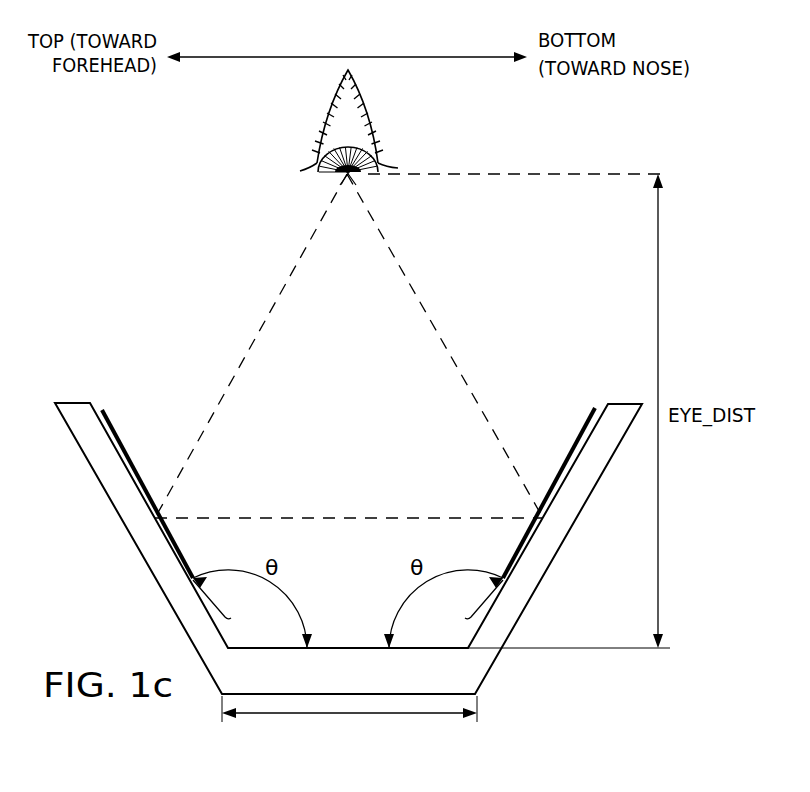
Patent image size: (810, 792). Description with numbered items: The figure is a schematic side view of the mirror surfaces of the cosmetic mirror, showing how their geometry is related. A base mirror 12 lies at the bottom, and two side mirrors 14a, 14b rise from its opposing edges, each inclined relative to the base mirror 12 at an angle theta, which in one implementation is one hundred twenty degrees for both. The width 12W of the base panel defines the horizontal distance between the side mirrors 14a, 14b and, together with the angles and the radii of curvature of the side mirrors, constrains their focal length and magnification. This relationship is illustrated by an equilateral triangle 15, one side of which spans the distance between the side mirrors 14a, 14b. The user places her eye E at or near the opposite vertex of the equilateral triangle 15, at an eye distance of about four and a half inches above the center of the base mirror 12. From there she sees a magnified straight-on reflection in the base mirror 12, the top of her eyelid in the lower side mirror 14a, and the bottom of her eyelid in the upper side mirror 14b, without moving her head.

The base mirror 12 is at (347, 648).
The width 12W is at (348, 716).
The side mirror 14a is at (586, 432).
The side mirror 14b is at (113, 434).
The equilateral triangle 15 is at (258, 332).
The eye E is at (322, 108).